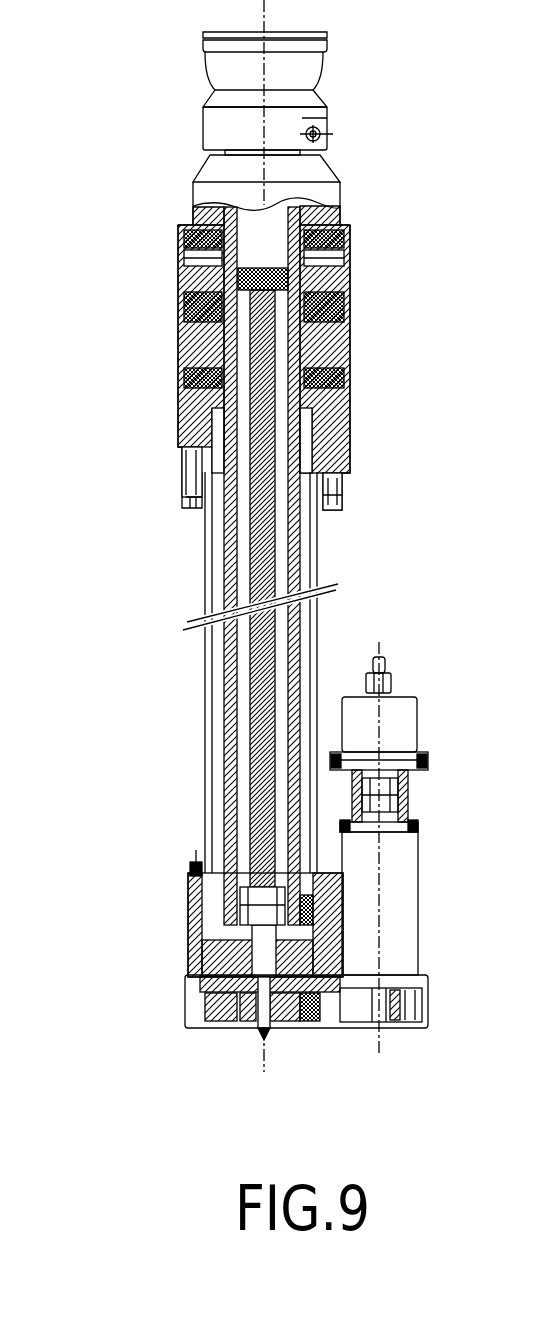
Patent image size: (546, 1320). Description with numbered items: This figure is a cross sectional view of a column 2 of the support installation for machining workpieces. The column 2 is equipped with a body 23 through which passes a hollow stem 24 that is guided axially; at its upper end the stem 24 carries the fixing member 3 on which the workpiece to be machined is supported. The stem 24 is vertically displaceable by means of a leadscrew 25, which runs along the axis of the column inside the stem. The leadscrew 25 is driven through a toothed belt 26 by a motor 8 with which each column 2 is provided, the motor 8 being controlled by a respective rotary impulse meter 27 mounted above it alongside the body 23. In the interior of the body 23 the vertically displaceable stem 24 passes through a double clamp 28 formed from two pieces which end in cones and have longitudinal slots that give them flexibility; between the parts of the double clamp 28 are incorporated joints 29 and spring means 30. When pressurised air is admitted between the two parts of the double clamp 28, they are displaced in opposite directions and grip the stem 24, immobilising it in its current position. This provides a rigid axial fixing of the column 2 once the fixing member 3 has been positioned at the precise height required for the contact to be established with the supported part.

The column 2 is at (190, 167).
The fixing member 3 is at (222, 66).
The motor 8 is at (393, 893).
The body 23 is at (338, 403).
The hollow stem 24 is at (293, 227).
The leadscrew 25 is at (253, 562).
The toothed belt 26 is at (340, 1028).
The impulse meter 27 is at (390, 720).
The double clamp 28 is at (195, 221).
The joints 29 is at (180, 311).
The spring means 30 is at (178, 257).